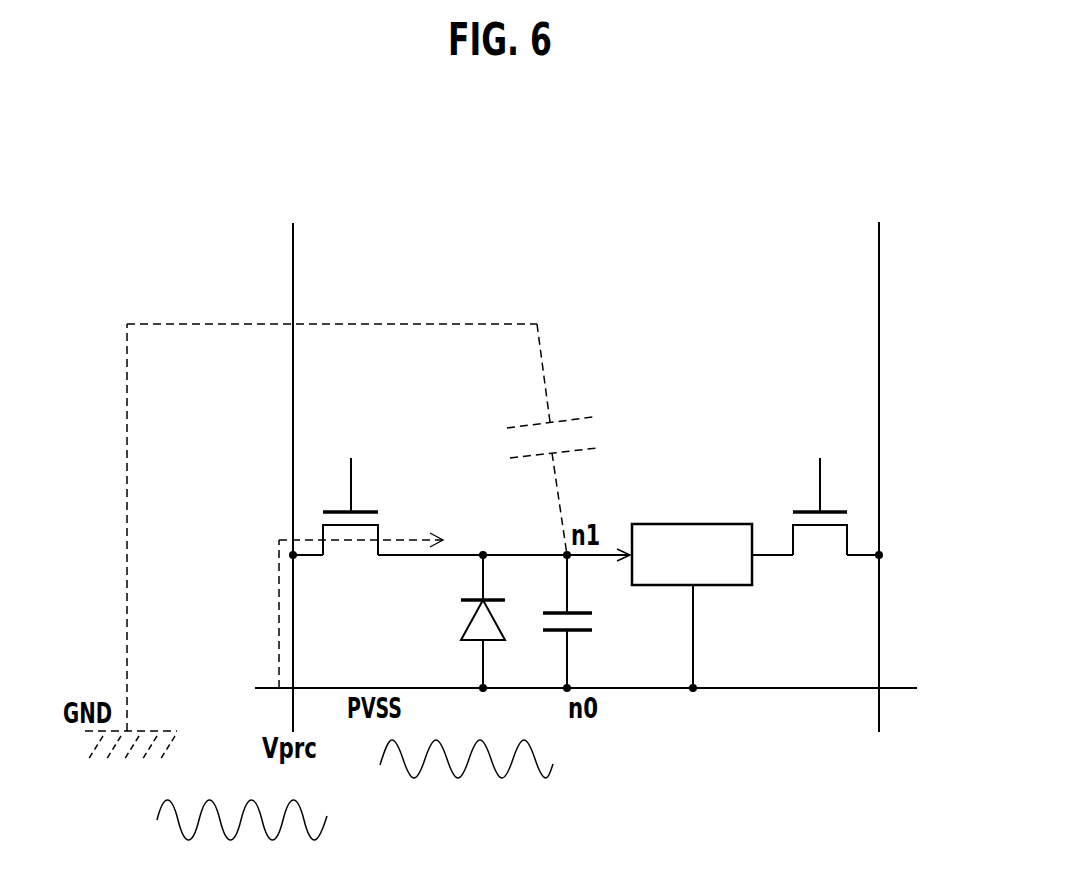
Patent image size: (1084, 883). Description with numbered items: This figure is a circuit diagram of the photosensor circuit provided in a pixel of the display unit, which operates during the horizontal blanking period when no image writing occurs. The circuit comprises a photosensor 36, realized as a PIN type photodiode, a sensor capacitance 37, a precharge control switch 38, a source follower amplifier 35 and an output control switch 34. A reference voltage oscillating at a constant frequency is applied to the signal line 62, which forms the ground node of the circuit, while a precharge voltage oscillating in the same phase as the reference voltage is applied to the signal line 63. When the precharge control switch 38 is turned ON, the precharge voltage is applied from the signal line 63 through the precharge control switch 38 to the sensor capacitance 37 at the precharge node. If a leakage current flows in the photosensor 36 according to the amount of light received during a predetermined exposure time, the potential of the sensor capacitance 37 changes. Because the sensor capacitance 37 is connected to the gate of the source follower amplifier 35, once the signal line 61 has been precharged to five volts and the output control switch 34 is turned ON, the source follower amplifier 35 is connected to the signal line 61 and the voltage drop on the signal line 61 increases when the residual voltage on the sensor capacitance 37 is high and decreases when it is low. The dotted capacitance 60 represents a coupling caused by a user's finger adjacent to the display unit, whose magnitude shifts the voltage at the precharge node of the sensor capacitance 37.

The output control switch 34 is at (820, 552).
The source follower amplifier 35 is at (693, 524).
The photosensor 36 is at (468, 610).
The sensor capacitance 37 is at (578, 632).
The precharge control switch 38 is at (351, 552).
The capacitance 60 is at (577, 418).
The signal line 61 is at (879, 322).
The signal line 62 is at (790, 690).
The signal line 63 is at (293, 438).